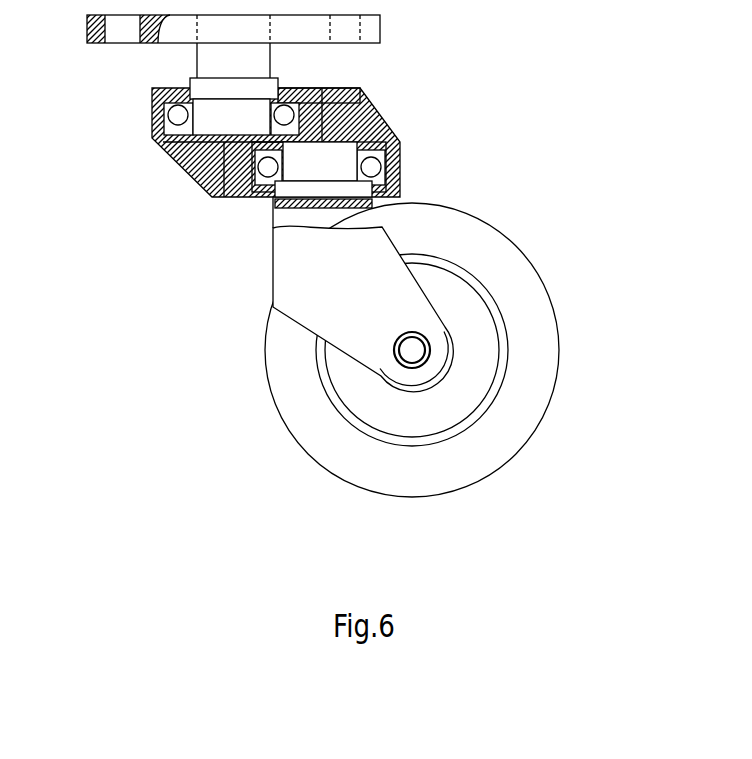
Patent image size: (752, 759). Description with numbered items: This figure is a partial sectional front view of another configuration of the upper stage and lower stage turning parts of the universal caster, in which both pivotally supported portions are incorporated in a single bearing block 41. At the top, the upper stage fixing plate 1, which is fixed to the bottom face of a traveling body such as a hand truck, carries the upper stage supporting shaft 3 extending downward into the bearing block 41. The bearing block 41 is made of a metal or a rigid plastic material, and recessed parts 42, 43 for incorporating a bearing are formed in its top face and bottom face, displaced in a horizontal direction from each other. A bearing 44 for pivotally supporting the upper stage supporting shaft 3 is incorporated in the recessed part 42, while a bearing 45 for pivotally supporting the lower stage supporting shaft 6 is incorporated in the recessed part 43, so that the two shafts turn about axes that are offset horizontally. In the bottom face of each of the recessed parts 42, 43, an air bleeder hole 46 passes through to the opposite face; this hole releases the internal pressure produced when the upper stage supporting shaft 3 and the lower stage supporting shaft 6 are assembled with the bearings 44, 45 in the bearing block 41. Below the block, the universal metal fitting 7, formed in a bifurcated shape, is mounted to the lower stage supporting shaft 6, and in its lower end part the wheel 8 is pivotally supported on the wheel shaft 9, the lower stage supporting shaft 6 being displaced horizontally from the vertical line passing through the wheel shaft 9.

The upper stage fixing plate 1 is at (381, 26).
The upper stage supporting shaft 3 is at (218, 58).
The lower stage supporting shaft 6 is at (283, 174).
The universal metal fitting 7 is at (312, 273).
The wheel 8 is at (297, 378).
The wheel shaft 9 is at (417, 350).
The bearing block 41 is at (176, 160).
The recessed part 42 is at (165, 130).
The recessed part 43 is at (326, 163).
The bearing 44 is at (168, 115).
The bearing 45 is at (383, 176).
The air bleeder hole 46 is at (330, 100).